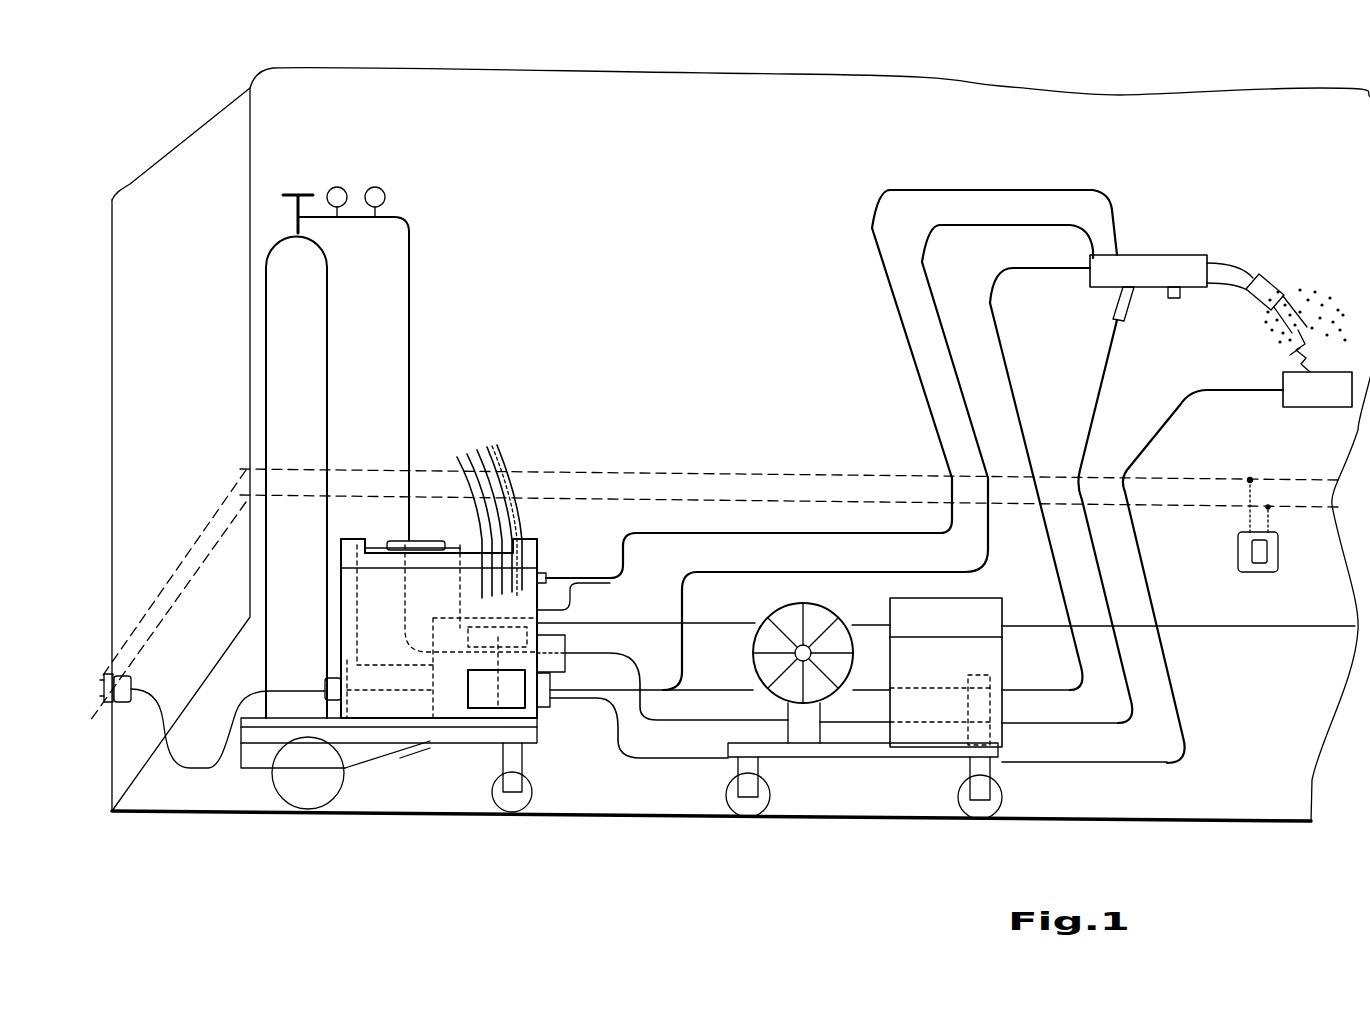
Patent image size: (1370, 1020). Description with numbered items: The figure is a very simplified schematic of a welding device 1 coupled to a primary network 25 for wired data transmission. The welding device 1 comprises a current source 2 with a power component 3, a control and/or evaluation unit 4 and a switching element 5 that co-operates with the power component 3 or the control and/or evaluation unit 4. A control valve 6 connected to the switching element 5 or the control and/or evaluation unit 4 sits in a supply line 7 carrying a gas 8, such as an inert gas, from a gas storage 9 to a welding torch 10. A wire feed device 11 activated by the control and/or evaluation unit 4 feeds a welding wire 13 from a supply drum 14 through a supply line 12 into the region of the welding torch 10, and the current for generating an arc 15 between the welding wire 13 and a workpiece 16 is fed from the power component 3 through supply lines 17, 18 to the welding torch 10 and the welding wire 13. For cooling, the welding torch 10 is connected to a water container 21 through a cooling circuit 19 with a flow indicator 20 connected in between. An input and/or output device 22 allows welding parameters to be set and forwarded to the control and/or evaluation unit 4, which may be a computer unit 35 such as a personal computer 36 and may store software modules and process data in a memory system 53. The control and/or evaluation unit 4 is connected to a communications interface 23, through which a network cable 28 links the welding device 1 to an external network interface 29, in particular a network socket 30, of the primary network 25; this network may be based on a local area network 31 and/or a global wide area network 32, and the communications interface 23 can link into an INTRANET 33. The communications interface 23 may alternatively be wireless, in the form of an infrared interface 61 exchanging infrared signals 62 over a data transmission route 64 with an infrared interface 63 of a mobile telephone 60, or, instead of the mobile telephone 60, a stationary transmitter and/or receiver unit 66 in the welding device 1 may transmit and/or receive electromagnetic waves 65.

The welding device 1 is at (196, 179).
The current source 2 is at (486, 371).
The power component 3 is at (490, 695).
The control and/or evaluation unit 4 is at (450, 700).
The switching element 5 is at (554, 728).
The control valve 6 is at (550, 667).
The supply line 7 is at (1121, 641).
The gas 8 is at (1289, 266).
The gas storage 9 is at (295, 318).
The welding torch 10 is at (1165, 267).
The wire feed device 11 is at (1049, 783).
The supply line 12 is at (1046, 516).
The welding wire 13 is at (914, 690).
The supply drum 14 is at (812, 625).
The arc 15 is at (1289, 355).
The workpiece 16 is at (1313, 388).
The supply line 17 is at (860, 565).
The supply line 18 is at (1154, 594).
The cooling circuit 19 is at (684, 530).
The flow indicator 20 is at (553, 564).
The water container 21 is at (492, 447).
The input and/or output device 22 is at (532, 537).
The communications interface 23 is at (323, 722).
The primary network 25 is at (189, 537).
The network cable 28 is at (205, 768).
The external network interface 29 is at (111, 715).
The network socket 30 is at (121, 708).
The local area network 31 is at (209, 494).
The global network 32 is at (1274, 467).
The INTRANET 33 is at (460, 630).
The computer unit 35 is at (406, 731).
The personal computer 36 is at (421, 734).
The memory system 53 is at (503, 743).
The mobile telephone 60 is at (438, 537).
The infrared interface 61 is at (368, 547).
The infrared signals 62 is at (383, 529).
The infrared interface 63 is at (413, 525).
The data transmission route 64 is at (373, 563).
The electromagnetic waves 65 is at (503, 456).
The stationary transmitter and/or receiver unit 66 is at (409, 470).